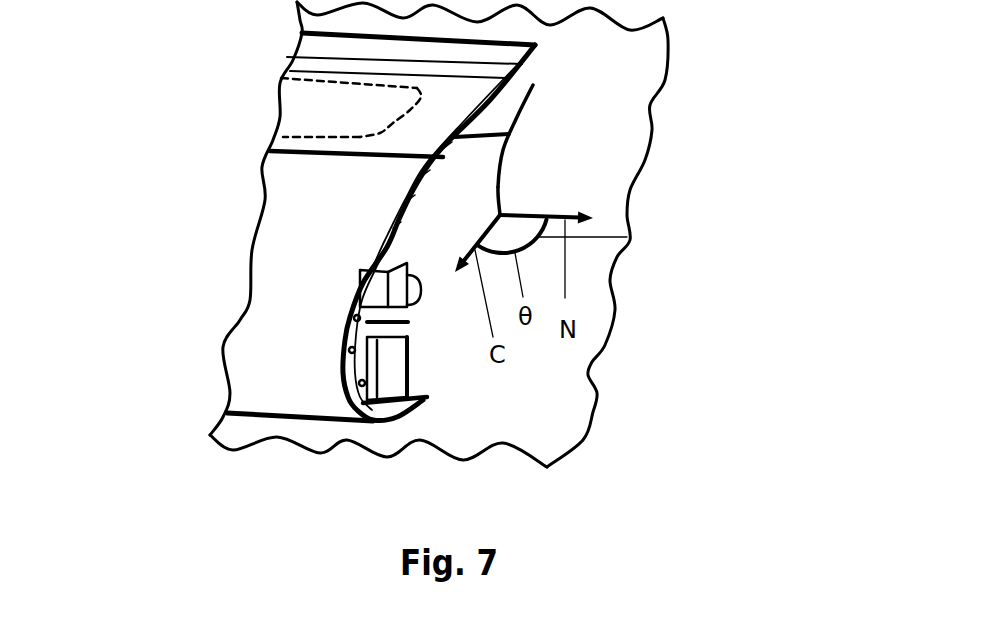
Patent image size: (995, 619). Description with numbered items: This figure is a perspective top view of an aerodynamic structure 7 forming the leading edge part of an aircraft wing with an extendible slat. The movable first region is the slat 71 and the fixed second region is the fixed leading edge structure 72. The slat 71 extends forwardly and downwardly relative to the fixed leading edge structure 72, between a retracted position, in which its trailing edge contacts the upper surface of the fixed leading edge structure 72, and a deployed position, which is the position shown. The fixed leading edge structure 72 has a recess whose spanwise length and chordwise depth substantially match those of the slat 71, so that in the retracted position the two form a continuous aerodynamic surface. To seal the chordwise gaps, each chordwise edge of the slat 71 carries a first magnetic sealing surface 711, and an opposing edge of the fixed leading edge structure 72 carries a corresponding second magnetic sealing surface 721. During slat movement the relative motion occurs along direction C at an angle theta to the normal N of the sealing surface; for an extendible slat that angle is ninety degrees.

The aerodynamic structure 7 is at (190, 62).
The slat 71 is at (300, 260).
The first magnetic sealing surface 711 is at (341, 362).
The fixed leading edge structure 72 is at (591, 143).
The second magnetic sealing surface 721 is at (500, 182).